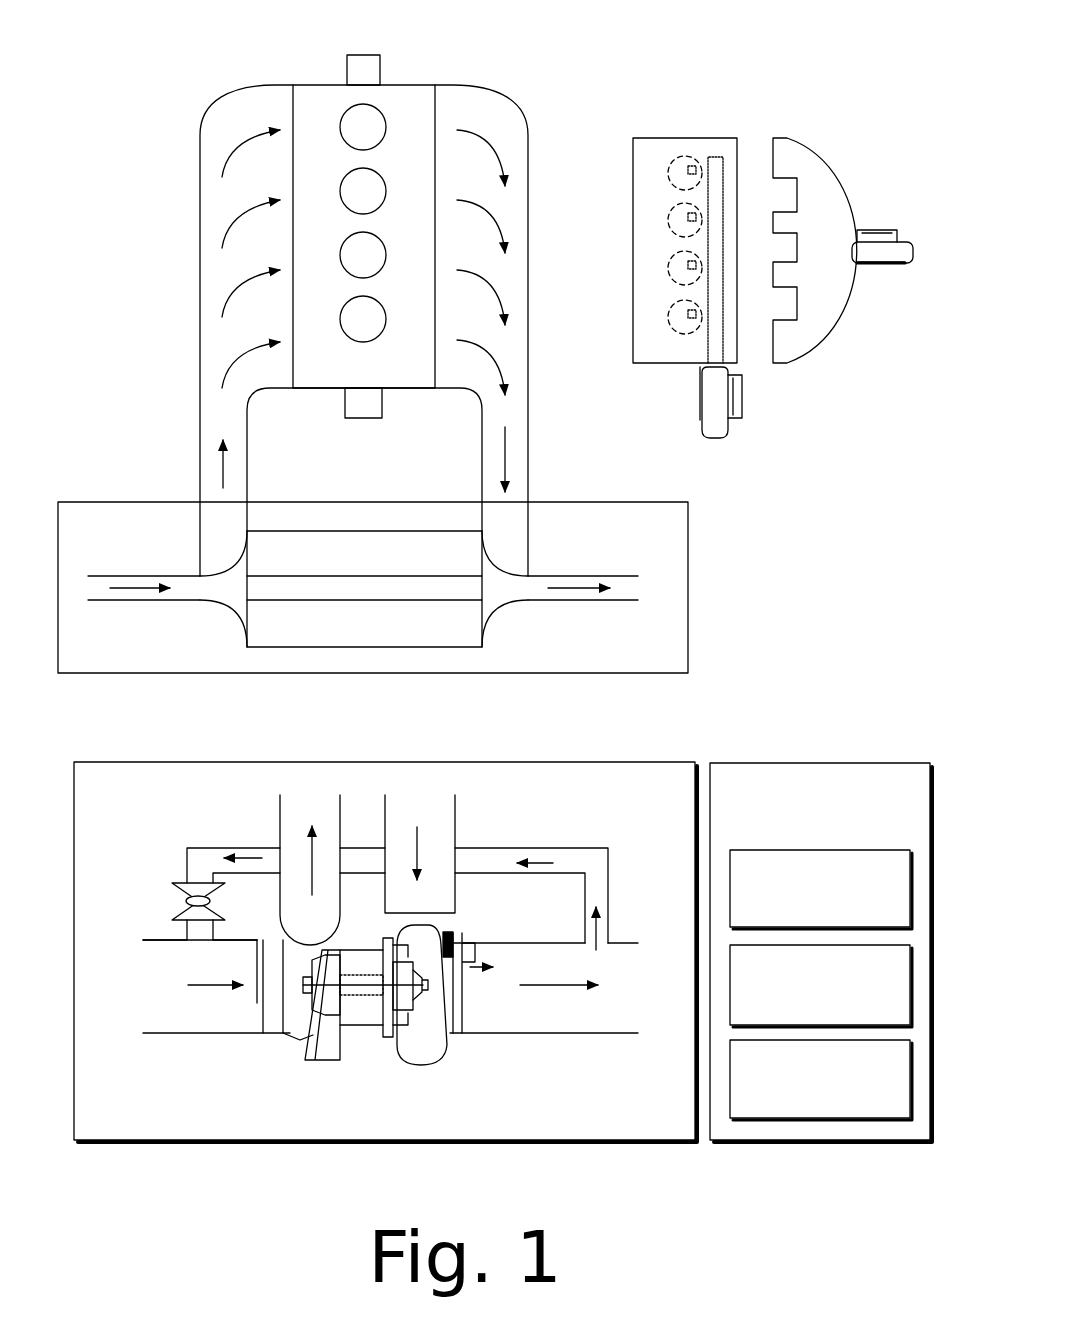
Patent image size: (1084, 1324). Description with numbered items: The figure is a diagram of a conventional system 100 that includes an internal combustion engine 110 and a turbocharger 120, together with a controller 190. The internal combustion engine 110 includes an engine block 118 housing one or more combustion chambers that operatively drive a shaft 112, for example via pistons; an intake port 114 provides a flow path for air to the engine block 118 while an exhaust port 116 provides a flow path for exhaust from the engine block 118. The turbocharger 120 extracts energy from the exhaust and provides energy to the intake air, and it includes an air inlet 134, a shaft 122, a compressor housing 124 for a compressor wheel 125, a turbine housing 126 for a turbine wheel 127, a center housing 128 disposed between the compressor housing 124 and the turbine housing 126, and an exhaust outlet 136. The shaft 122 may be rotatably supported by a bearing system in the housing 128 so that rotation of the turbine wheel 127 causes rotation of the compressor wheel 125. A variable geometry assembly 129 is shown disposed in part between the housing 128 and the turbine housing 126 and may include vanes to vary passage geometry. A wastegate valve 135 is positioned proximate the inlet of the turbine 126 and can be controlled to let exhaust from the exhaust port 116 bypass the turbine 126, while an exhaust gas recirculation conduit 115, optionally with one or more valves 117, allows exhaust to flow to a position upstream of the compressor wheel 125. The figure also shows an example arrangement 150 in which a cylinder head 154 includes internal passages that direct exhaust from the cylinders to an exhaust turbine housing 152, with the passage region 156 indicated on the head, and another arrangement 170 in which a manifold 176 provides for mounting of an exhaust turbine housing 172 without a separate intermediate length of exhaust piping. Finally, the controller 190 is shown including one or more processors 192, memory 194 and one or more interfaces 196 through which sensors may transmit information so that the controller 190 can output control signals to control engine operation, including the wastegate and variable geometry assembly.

The system 100 is at (514, 38).
The internal combustion engine 110 is at (329, 84).
The shaft 112 is at (366, 55).
The intake port 114 is at (217, 104).
The exhaust gas recirculation conduit 115 is at (200, 848).
The exhaust port 116 is at (511, 101).
The valve 117 is at (178, 883).
The engine block 118 is at (347, 382).
The turbocharger 120 is at (586, 502).
The shaft 122 is at (364, 602).
The compressor housing 124 is at (228, 612).
The compressor wheel 125 is at (313, 1040).
The turbine housing 126 is at (506, 608).
The turbine wheel 127 is at (447, 1040).
The center housing 128 is at (383, 568).
The variable geometry assembly 129 is at (388, 1030).
The air inlet 134 is at (164, 575).
The wastegate valve 135 is at (453, 935).
The exhaust outlet 136 is at (590, 575).
The arrangement 150 is at (671, 266).
The exhaust turbine housing 152 is at (700, 392).
The cylinder head 154 is at (633, 223).
The manifold 156 is at (717, 155).
The arrangement 170 is at (858, 234).
The exhaust turbine housing 172 is at (880, 265).
The manifold 176 is at (835, 320).
The controller 190 is at (801, 838).
The processor 192 is at (803, 916).
The memory 194 is at (803, 1011).
The interface 196 is at (803, 1106).